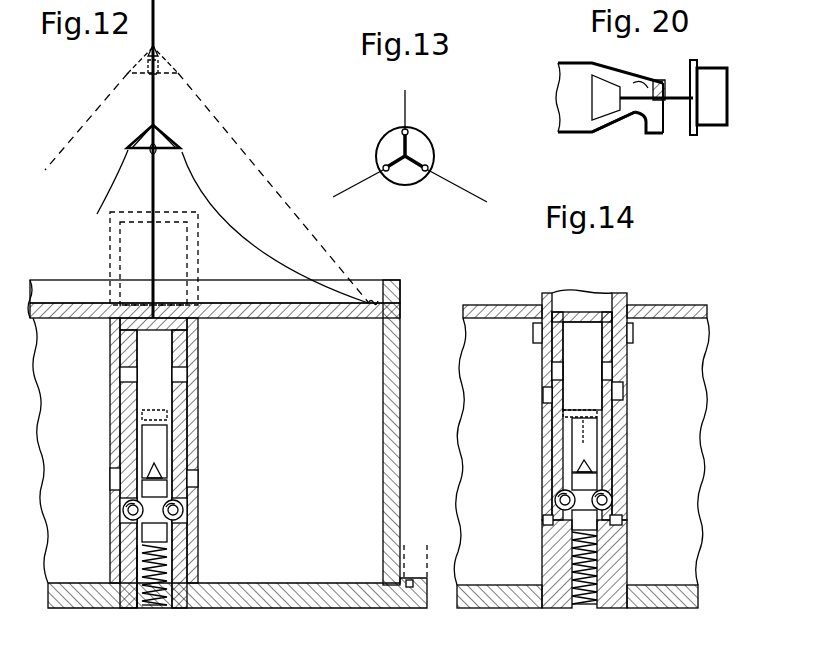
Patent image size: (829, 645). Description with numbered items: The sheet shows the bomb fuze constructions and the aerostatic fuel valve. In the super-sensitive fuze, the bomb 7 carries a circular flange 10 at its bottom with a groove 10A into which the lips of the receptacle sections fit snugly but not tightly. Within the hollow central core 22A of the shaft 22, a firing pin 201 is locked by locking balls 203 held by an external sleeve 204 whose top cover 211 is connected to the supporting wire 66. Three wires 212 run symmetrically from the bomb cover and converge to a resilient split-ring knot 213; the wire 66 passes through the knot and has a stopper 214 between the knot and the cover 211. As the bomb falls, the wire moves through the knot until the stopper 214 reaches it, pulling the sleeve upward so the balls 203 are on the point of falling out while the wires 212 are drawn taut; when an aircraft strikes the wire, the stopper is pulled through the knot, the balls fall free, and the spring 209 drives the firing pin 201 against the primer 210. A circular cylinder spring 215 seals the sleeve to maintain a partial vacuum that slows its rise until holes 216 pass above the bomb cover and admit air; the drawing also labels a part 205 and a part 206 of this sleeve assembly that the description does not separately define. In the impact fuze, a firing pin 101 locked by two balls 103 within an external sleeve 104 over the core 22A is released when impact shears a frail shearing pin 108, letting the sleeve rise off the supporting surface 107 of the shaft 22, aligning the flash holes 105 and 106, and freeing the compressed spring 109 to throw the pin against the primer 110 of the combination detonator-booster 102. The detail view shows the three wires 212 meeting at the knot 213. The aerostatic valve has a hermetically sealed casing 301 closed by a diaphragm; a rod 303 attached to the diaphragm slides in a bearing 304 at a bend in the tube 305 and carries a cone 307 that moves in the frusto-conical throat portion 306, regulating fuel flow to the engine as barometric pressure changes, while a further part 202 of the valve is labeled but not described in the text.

In FIG. 12, the bomb 7 is at (401, 493).
In FIG. 14, the bomb 7 is at (656, 306).
In FIG. 12, the circular flange 10 is at (418, 608).
In FIG. 12, the groove 10A is at (411, 579).
In FIG. 12, the shaft 22 is at (180, 553).
In FIG. 14, the shaft 22 is at (620, 576).
In FIG. 12, the hollow central core 22A is at (172, 432).
In FIG. 14, the hollow central core 22A is at (612, 433).
In FIG. 12, the supporting wire 66 is at (154, 34).
In FIG. 14, the firing pin 101 is at (593, 463).
In FIG. 14, the combination detonator-booster 102 is at (597, 392).
In FIG. 14, the locking balls 103 is at (612, 497).
In FIG. 14, the external sleeve 104 is at (538, 325).
In FIG. 14, the flash hole 105 is at (620, 399).
In FIG. 14, the flash hole 106 is at (563, 371).
In FIG. 14, the supporting surface 107 is at (628, 335).
In FIG. 14, the shearing pin 108 is at (547, 347).
In FIG. 14, the compressed spring 109 is at (595, 558).
In FIG. 14, the primer 110 is at (584, 445).
In FIG. 12, the firing pin 201 is at (158, 467).
In FIG. 20, the elbow outlet 202 is at (690, 113).
In FIG. 12, the locking balls 203 is at (183, 509).
In FIG. 12, the external sleeve 204 is at (197, 368).
In FIG. 12, the retaining ring 205 is at (192, 480).
In FIG. 12, the port 206 is at (137, 375).
In FIG. 12, the spring 209 is at (158, 594).
In FIG. 12, the primer 210 is at (119, 427).
In FIG. 12, the top cover 211 is at (185, 316).
In FIG. 12, the wires 212 is at (110, 199).
In FIG. 13, the wires 212 is at (406, 111).
In FIG. 12, the resilient split-ring knot 213 is at (163, 151).
In FIG. 13, the resilient split-ring knot 213 is at (432, 148).
In FIG. 12, the stopper 214 is at (150, 150).
In FIG. 12, the circular cylinder spring 215 is at (196, 334).
In FIG. 12, the holes 216 is at (190, 387).
In FIG. 20, the casing 301 is at (727, 86).
In FIG. 20, the rod 303 is at (667, 81).
In FIG. 20, the bearing 304 is at (638, 83).
In FIG. 20, the tube 305 is at (577, 54).
In FIG. 20, the frusto-conical throat portion 306 is at (607, 122).
In FIG. 20, the cone 307 is at (590, 100).